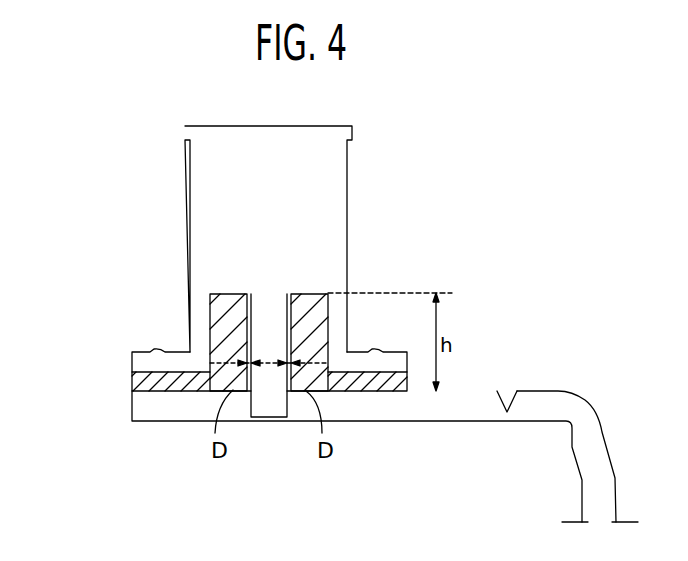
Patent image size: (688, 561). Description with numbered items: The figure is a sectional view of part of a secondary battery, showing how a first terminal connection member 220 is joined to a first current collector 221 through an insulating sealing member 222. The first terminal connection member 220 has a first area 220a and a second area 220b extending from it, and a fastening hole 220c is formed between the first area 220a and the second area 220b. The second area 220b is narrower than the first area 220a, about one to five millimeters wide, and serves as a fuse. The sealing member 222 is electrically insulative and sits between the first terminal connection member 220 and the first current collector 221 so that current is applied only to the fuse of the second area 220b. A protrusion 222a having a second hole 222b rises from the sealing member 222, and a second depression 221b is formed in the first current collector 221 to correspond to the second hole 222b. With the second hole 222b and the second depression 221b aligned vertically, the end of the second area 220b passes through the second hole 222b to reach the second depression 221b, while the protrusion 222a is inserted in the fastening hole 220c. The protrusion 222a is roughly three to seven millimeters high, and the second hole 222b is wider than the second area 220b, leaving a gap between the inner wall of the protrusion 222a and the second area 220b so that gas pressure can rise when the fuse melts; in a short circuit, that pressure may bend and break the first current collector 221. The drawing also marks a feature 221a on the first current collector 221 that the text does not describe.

The first terminal connection member 220 is at (307, 249).
The first area 220a is at (332, 192).
The second area 220b is at (268, 317).
The fastening hole 220c is at (289, 294).
The first current collector 221 is at (385, 408).
The groove 221a is at (508, 398).
The second depression 221b is at (266, 420).
The sealing member 222 is at (218, 299).
The protrusion 222a is at (232, 303).
The second hole 222b is at (247, 296).